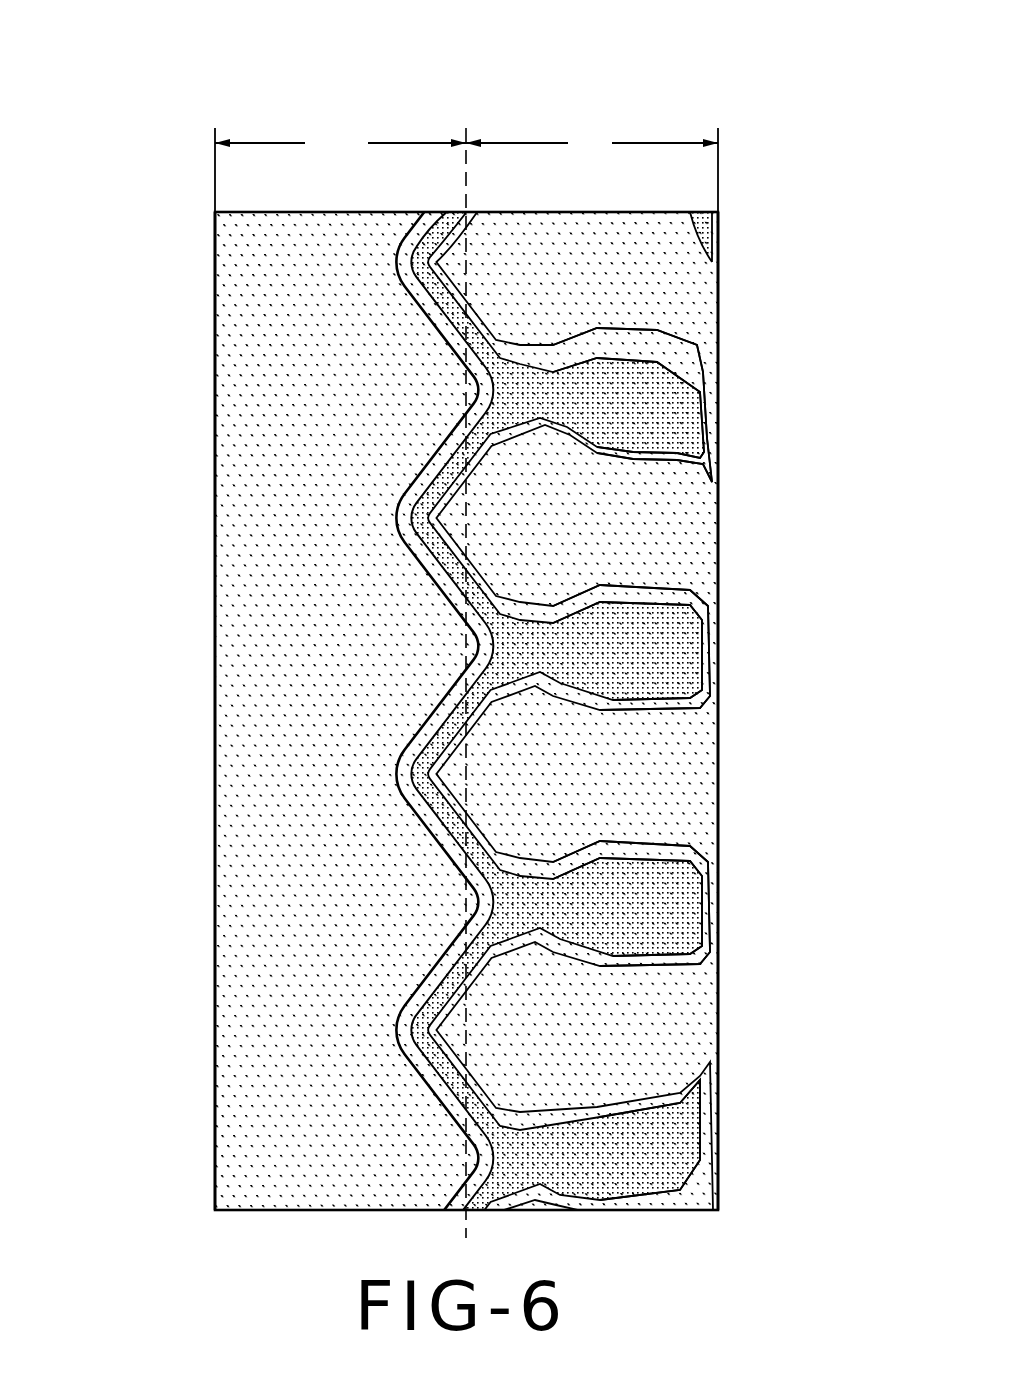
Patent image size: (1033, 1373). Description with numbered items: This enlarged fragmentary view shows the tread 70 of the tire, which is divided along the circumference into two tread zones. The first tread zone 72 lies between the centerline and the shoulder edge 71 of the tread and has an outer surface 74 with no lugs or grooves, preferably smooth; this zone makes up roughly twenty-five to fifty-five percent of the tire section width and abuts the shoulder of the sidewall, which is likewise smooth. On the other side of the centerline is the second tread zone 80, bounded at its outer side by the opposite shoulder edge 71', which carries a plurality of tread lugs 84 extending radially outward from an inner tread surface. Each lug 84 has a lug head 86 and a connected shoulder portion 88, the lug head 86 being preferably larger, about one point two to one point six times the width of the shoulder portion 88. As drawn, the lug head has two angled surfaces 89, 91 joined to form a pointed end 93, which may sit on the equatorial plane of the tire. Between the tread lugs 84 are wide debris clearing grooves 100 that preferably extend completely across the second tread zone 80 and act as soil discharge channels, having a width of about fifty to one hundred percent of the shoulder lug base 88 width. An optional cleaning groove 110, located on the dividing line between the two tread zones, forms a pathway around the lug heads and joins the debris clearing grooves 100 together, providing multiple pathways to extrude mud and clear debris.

The tread 70 is at (160, 140).
The shoulder edge 71 is at (143, 711).
The second edge 71' is at (791, 711).
The first tread zone 72 is at (340, 169).
The outer surface 74 is at (290, 432).
The second tread zone 80 is at (592, 682).
The tread lugs 84 is at (585, 527).
The lug head 86 is at (490, 272).
The shoulder portion 88 is at (685, 283).
The angled surface 89 is at (472, 708).
The angled surface 91 is at (478, 838).
The pointed end 93 is at (430, 772).
The debris clearing grooves 100 is at (630, 625).
The cleaning groove 110 is at (425, 992).